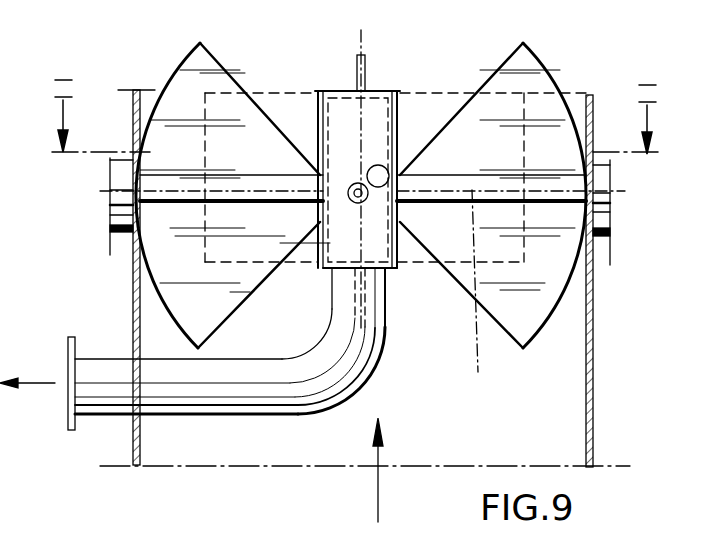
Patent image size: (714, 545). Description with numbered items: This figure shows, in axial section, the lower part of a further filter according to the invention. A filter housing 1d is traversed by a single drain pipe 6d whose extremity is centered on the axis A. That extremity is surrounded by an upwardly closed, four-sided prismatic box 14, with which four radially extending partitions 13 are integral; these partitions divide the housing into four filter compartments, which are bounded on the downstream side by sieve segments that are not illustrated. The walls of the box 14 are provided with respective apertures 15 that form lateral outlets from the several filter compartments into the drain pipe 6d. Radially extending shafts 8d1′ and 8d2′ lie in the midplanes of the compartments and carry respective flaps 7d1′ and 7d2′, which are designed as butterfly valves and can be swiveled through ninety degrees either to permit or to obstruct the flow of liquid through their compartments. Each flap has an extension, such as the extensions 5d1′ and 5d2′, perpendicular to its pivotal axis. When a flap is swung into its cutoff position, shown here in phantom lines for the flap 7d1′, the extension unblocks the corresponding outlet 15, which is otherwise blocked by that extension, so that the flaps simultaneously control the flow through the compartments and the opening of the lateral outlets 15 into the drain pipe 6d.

The filter housing 1d is at (592, 428).
The flap extension 5d1′ is at (318, 258).
The flap extension 5d2′ is at (415, 165).
The drain pipe 6d is at (282, 405).
The flap 7d1′ is at (490, 297).
The flap 7d2′ is at (535, 327).
The radially extending shaft 8d1′ is at (385, 270).
The radially extending shaft 8d2′ is at (552, 210).
The radially extending partition 13 is at (415, 258).
The prismatic box 14 is at (333, 113).
The aperture 15 is at (380, 165).
The axis A is at (362, 34).